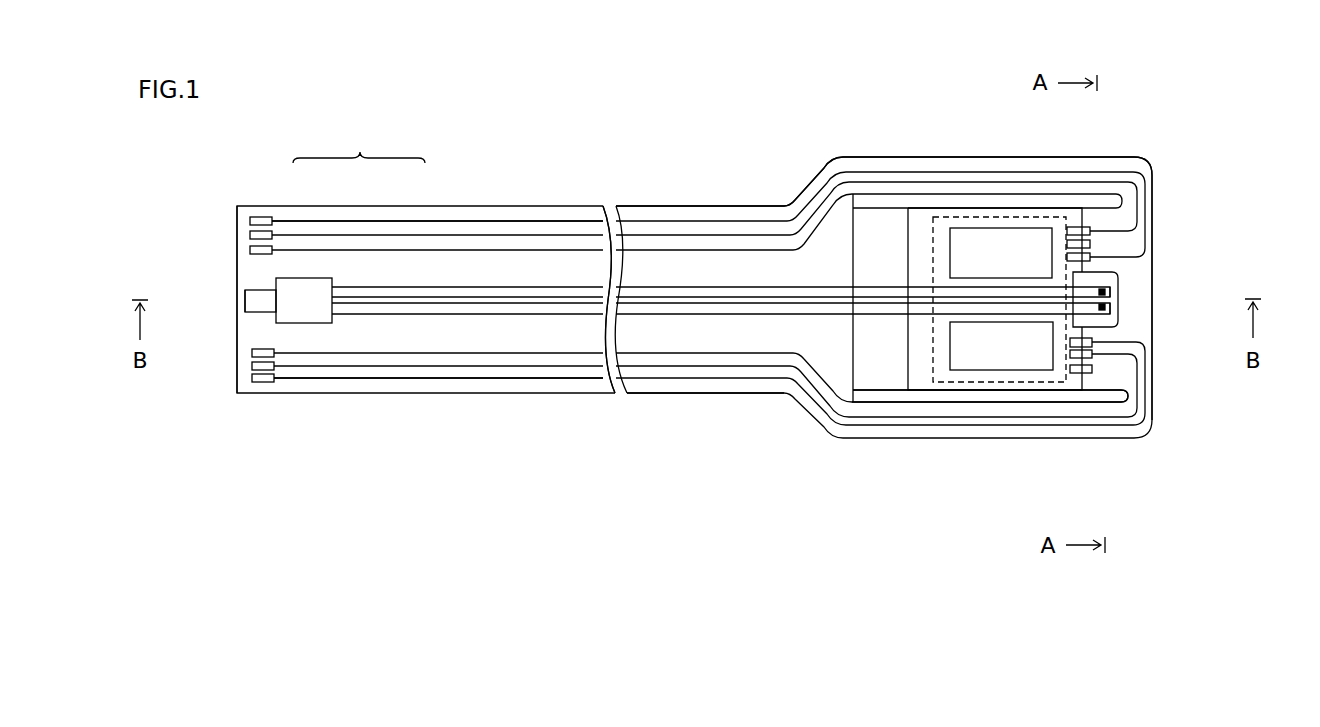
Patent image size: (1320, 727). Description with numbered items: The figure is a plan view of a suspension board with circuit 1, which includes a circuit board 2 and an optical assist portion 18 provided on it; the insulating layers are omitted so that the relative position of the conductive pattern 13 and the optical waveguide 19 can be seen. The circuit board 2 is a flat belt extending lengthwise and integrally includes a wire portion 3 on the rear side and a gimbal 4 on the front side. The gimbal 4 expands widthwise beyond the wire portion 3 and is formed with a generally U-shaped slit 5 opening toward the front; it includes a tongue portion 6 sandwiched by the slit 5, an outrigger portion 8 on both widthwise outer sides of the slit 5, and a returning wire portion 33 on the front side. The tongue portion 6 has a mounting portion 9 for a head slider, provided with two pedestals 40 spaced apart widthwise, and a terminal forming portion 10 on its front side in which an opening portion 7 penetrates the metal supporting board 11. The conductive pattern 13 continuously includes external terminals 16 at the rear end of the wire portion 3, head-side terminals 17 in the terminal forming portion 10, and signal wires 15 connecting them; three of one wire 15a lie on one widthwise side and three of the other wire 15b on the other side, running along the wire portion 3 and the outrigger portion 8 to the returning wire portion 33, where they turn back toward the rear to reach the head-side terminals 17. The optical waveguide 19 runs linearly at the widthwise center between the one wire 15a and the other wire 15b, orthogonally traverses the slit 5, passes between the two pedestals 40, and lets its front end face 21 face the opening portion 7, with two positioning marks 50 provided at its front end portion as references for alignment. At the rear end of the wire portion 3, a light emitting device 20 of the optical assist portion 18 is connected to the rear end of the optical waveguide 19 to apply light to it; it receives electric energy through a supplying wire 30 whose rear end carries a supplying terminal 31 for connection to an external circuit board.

The suspension board with circuit 1 is at (612, 604).
The circuit board 2 is at (758, 396).
The wire portion 3 is at (630, 440).
The gimbal 4 is at (787, 182).
The slit 5 is at (1098, 397).
The tongue portion 6 is at (906, 238).
The opening portion 7 is at (1120, 278).
The outrigger portion 8 is at (997, 160).
The mounting portion 9 is at (1033, 217).
The terminal forming portion 10 is at (1082, 212).
The metal supporting board 11 is at (700, 394).
The conductive pattern 13 is at (382, 320).
The signal wires 15 is at (562, 345).
The one wire 15a is at (492, 221).
The other wire 15b is at (540, 462).
The external terminals 16 is at (250, 250).
The head-side terminals 17 is at (1090, 257).
The optical assist portion 18 is at (359, 143).
The optical waveguide 19 is at (393, 287).
The light emitting device 20 is at (303, 278).
The front end face 21 is at (1113, 304).
The supplying wire 30 is at (258, 290).
The supplying terminal 31 is at (245, 302).
The returning wire portion 33 is at (1152, 186).
The pedestals 40 is at (962, 228).
The positioning marks 50 is at (1107, 292).